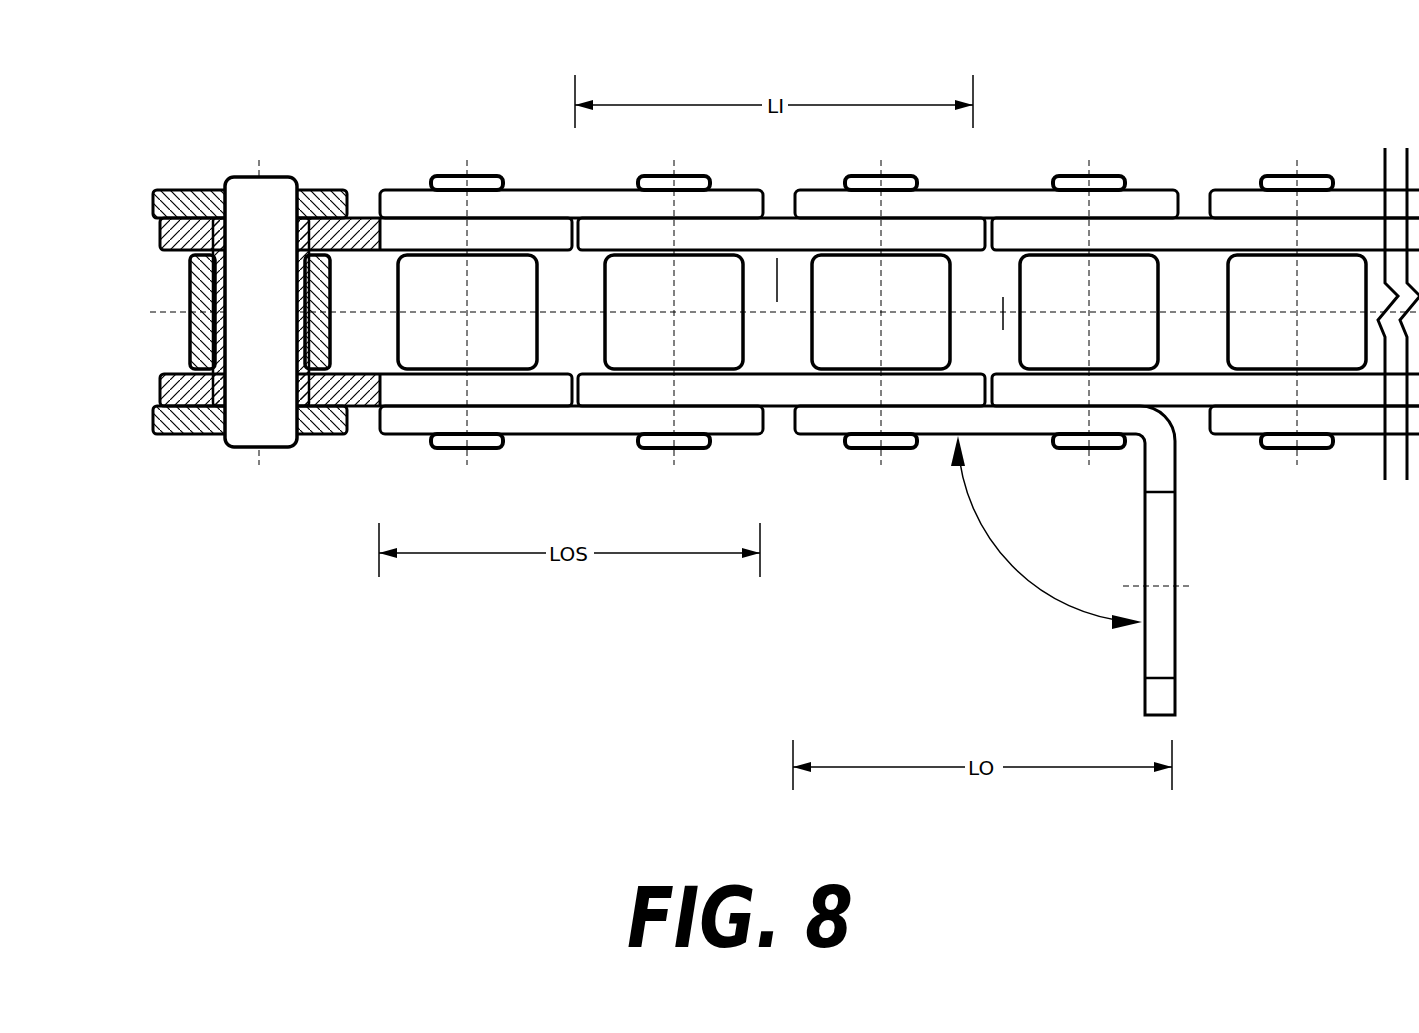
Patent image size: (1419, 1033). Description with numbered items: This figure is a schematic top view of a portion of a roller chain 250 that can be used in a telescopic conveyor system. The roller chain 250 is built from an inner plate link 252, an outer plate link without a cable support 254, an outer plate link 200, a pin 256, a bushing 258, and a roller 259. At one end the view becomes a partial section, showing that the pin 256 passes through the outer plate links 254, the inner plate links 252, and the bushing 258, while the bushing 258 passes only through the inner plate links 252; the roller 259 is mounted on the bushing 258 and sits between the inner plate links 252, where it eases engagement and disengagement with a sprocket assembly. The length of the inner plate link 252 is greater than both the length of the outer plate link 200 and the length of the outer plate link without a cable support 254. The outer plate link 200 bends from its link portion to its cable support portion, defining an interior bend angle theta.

The outer plate link 200 is at (1176, 666).
The roller chain 250 is at (1298, 68).
The inner plate link 252 is at (530, 232).
The outer plate link without a cable support 254 is at (196, 188).
The pin 256 is at (276, 176).
The bushing 258 is at (310, 205).
The roller 259 is at (1115, 295).